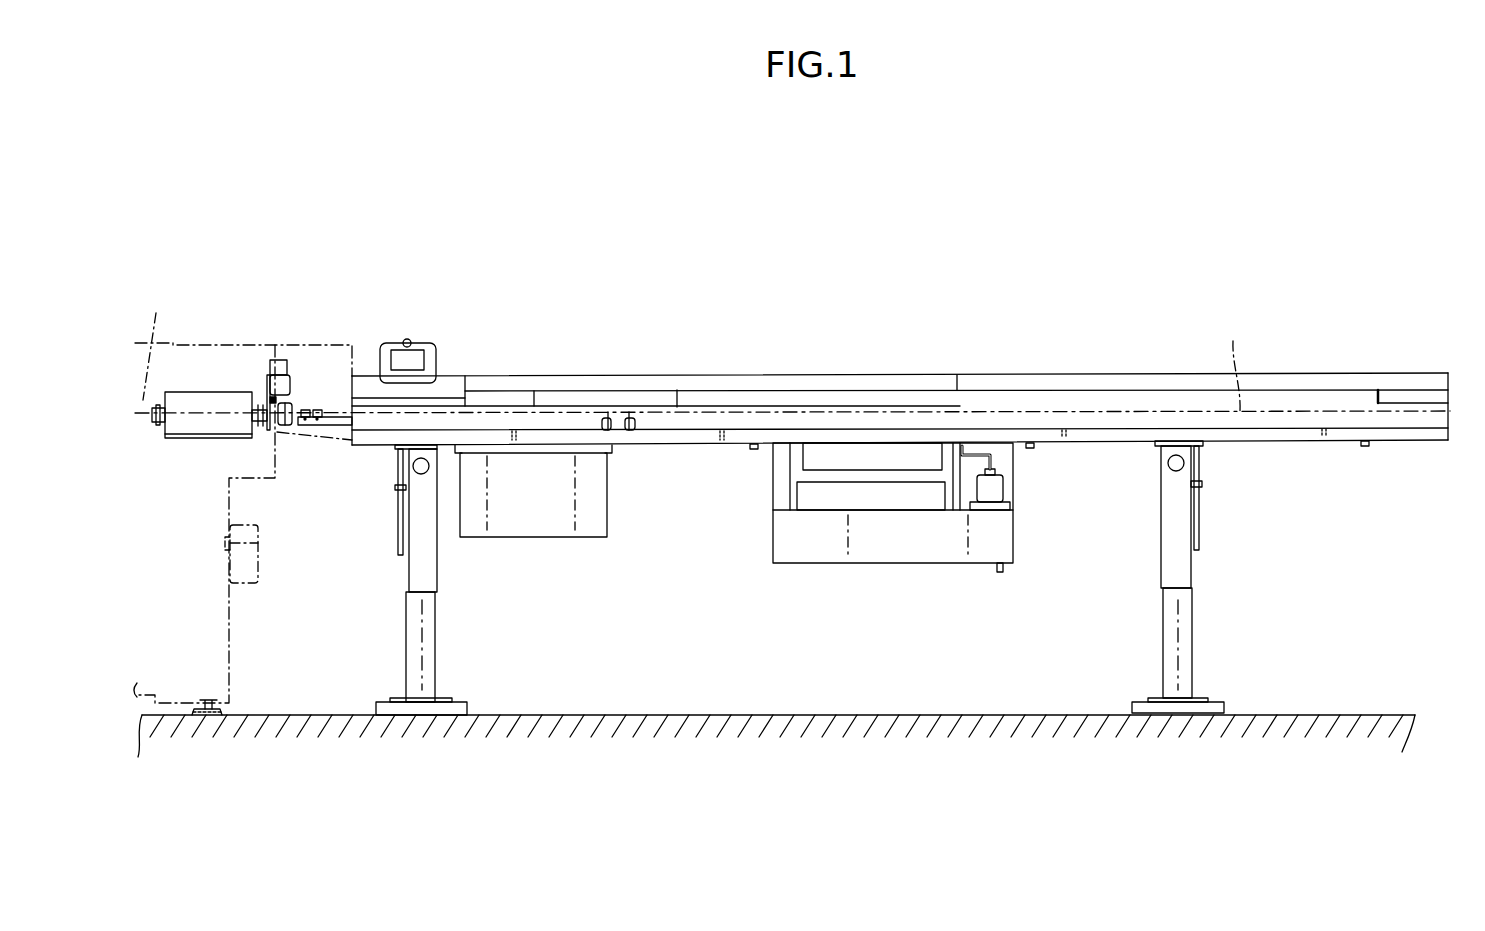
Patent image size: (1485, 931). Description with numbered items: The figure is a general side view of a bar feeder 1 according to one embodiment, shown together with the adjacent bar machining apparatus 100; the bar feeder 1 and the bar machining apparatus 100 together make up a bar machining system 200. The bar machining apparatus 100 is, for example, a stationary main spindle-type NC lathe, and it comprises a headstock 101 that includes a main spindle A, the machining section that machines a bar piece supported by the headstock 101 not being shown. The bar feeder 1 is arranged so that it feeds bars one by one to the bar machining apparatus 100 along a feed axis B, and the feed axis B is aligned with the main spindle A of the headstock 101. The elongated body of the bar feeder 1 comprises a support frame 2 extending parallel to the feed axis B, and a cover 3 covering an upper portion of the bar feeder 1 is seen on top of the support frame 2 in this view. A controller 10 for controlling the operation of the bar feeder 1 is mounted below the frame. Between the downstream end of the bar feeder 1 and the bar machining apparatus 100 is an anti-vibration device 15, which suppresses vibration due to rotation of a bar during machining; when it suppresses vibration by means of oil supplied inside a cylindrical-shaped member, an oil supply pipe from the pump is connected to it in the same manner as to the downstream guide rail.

The bar machining system 200 is at (1014, 220).
The bar feeder 1 is at (750, 351).
The support frame 2 is at (683, 446).
The cover 3 is at (902, 380).
The controller 10 is at (533, 522).
The anti-vibration device 15 is at (330, 410).
The bar machining apparatus 100 is at (285, 326).
The headstock 101 is at (208, 405).
The main spindle A is at (154, 341).
The feed axis B is at (1233, 362).